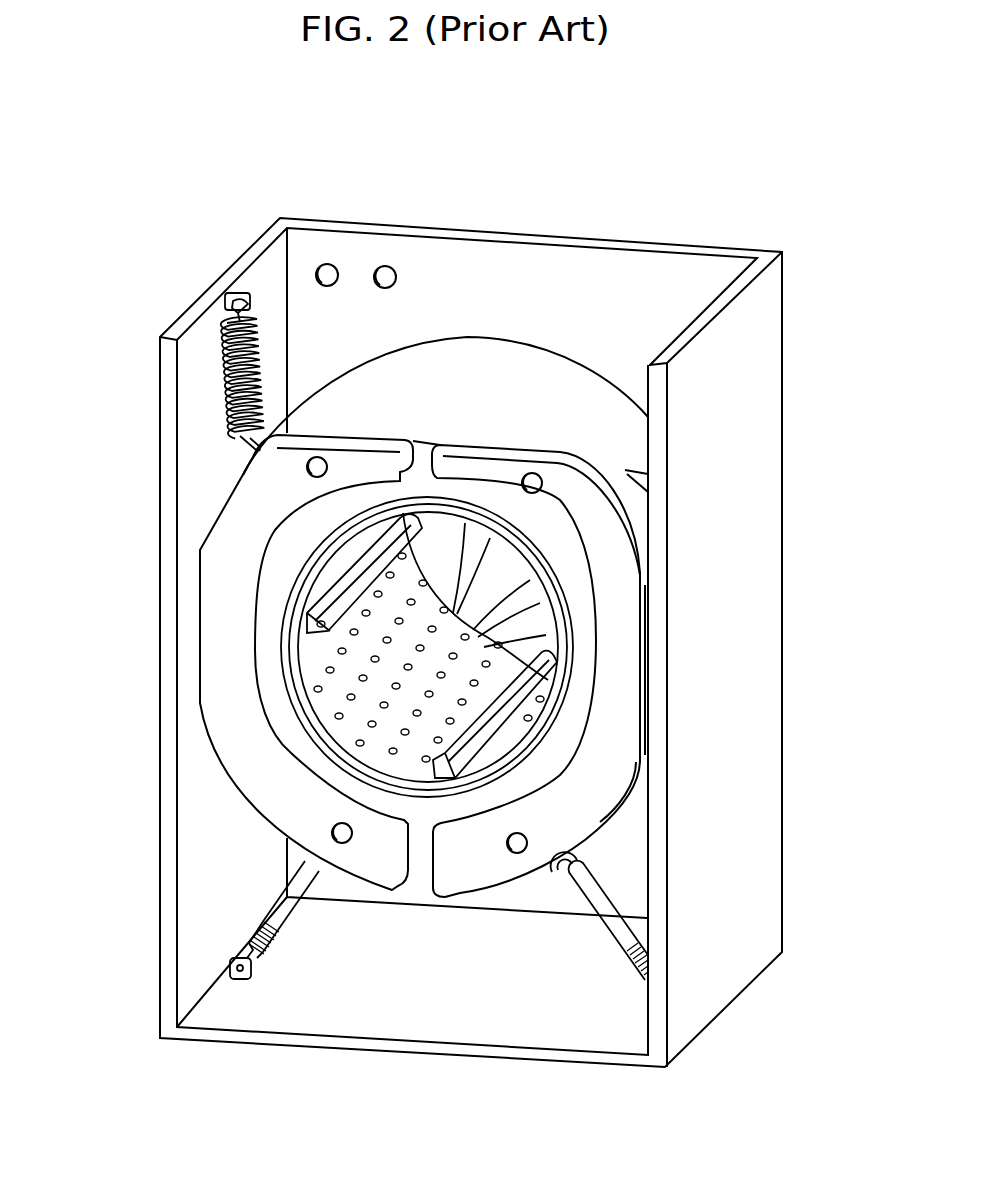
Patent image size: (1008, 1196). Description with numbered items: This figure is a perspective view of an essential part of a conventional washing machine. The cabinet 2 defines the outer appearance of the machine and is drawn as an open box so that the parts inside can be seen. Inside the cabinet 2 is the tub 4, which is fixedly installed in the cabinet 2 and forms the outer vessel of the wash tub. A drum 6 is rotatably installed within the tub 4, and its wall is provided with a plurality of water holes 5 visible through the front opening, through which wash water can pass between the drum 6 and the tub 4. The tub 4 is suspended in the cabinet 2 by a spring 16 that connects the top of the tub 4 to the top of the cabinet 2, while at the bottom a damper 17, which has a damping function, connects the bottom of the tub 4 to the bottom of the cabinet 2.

The cabinet 2 is at (762, 488).
The tub 4 is at (513, 360).
The water holes 5 is at (337, 720).
The drum 6 is at (318, 670).
The spring 16 is at (228, 391).
The damper 17 is at (254, 932).